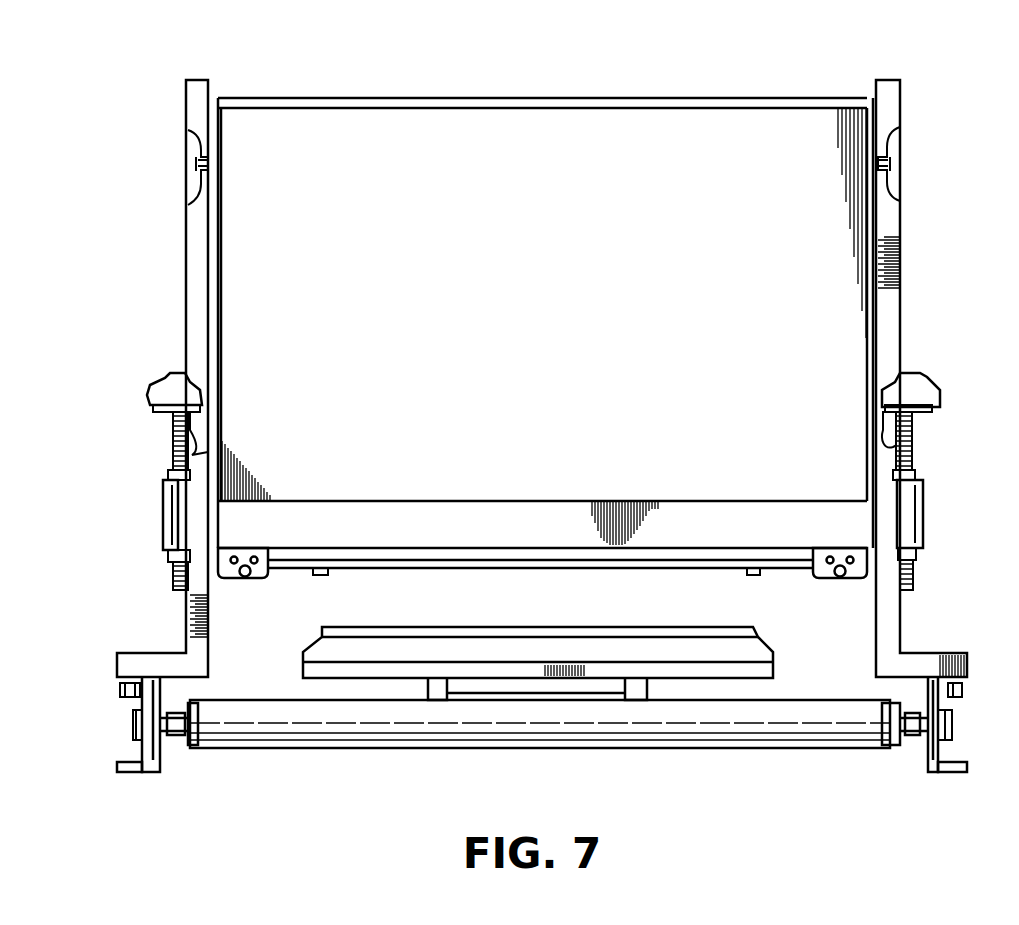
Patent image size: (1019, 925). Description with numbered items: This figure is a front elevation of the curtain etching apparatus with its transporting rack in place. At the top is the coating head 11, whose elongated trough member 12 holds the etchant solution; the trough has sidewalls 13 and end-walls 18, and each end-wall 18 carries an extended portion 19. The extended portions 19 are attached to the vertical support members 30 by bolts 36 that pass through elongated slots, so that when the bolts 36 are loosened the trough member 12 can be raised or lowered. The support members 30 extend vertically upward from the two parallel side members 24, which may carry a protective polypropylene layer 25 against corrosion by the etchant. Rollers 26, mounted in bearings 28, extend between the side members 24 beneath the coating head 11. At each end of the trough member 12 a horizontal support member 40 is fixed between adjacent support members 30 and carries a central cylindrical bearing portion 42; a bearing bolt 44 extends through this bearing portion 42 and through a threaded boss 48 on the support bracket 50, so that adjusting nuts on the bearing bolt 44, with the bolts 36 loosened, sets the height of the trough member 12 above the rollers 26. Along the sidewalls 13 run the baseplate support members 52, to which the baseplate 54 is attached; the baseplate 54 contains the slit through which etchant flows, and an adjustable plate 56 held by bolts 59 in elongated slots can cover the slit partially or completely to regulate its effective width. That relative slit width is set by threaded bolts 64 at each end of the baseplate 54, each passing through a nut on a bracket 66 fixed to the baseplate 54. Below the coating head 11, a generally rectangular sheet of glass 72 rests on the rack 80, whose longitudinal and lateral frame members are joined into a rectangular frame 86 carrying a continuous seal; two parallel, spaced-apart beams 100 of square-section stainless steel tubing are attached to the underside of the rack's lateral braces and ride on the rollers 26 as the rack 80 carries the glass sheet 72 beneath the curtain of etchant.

The coating head 11 is at (473, 83).
The trough member 12 is at (688, 98).
The sidewalls 13 is at (781, 130).
The end-walls 18 is at (882, 124).
The extended portions 19 is at (218, 254).
The side members 24 is at (139, 773).
The polypropylene layer 25 is at (163, 760).
The rollers 26 is at (623, 725).
The bearings 28 is at (133, 723).
The support members 30 is at (186, 337).
The bolts 36 is at (191, 165).
The horizontal support member 40 is at (915, 500).
The bearing portion 42 is at (924, 528).
The bearing bolt 44 is at (913, 440).
The threaded boss 48 is at (933, 408).
The support bracket 50 is at (915, 382).
The baseplate support members 52 is at (906, 558).
The baseplate 54 is at (622, 551).
The plate 56 is at (468, 566).
The bolts 59 is at (327, 574).
The threaded bolts 64 is at (245, 578).
The bracket 66 is at (270, 579).
The sheet of glass 72 is at (645, 626).
The rack 80 is at (689, 694).
The rectangular frame 86 is at (745, 680).
The beams 100 is at (437, 692).